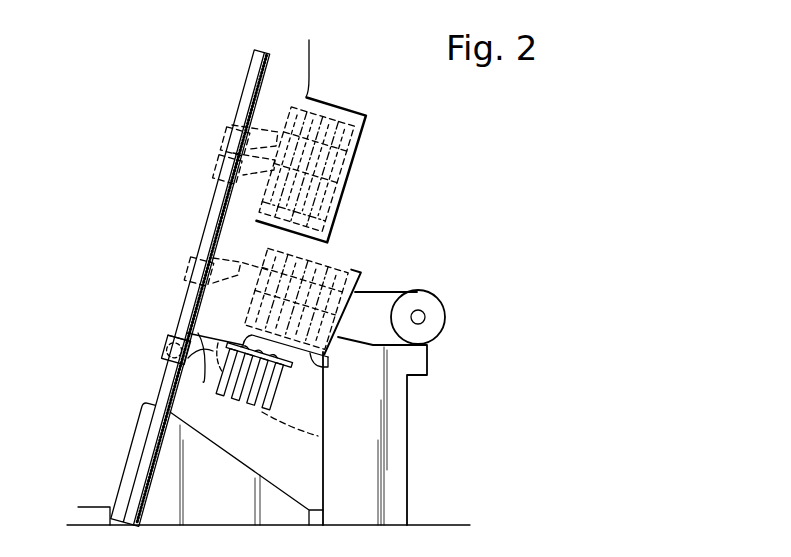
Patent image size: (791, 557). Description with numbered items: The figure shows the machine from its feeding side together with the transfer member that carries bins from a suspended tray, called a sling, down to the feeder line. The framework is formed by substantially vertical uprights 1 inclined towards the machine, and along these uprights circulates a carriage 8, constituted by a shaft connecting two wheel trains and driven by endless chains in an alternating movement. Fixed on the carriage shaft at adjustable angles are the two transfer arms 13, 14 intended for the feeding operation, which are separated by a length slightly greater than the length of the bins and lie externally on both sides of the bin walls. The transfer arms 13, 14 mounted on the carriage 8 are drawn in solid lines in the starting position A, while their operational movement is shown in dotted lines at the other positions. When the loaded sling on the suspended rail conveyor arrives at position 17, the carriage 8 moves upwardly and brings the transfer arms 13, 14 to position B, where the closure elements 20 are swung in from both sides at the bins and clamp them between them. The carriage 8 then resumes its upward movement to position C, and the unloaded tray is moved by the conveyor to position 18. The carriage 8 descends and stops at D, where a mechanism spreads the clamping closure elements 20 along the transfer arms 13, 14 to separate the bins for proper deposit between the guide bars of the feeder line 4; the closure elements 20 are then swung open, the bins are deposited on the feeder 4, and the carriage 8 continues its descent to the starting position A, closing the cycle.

The upright 1 is at (204, 218).
The pre-feed station 4 is at (328, 360).
The carriage 8 is at (167, 335).
The transfer arm 13 is at (196, 370).
The transfer arm 14 is at (205, 358).
The tray position 17 is at (330, 108).
The tray position 18 is at (306, 169).
The closure element 20 is at (276, 402).
The starting position A is at (163, 352).
The clamping position B is at (214, 163).
The upper position C is at (222, 130).
The depositing position D is at (182, 268).